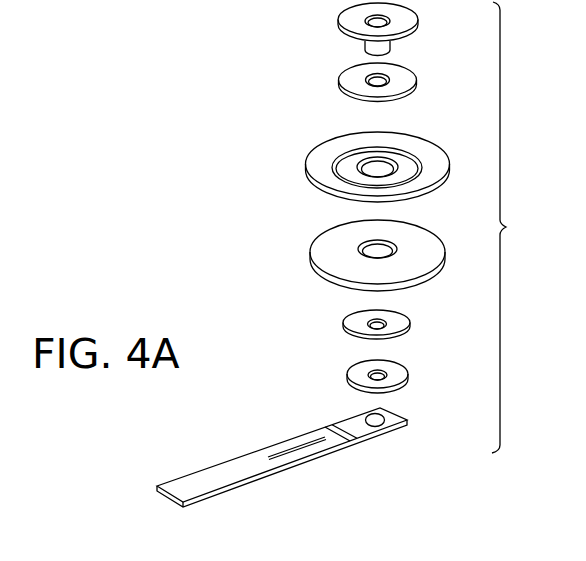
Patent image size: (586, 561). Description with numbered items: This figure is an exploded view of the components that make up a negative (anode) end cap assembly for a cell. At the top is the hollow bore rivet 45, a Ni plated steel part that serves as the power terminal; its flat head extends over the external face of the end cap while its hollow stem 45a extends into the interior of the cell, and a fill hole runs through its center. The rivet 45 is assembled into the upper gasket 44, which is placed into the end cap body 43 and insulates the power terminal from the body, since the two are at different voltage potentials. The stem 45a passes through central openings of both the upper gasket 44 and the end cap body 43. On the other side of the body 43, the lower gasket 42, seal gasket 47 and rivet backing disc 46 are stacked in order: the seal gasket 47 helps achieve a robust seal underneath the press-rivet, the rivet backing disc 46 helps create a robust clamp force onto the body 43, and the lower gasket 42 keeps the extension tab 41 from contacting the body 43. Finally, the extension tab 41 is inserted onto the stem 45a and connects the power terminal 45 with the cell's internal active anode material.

The extension tab 41 is at (328, 449).
The lower gasket 42 is at (310, 250).
The end cap body 43 is at (305, 165).
The upper gasket 44 is at (338, 80).
The hollow bore rivet 45 is at (338, 20).
The stem 45a is at (391, 51).
The rivet backing disc 46 is at (347, 373).
The seal gasket 47 is at (343, 321).